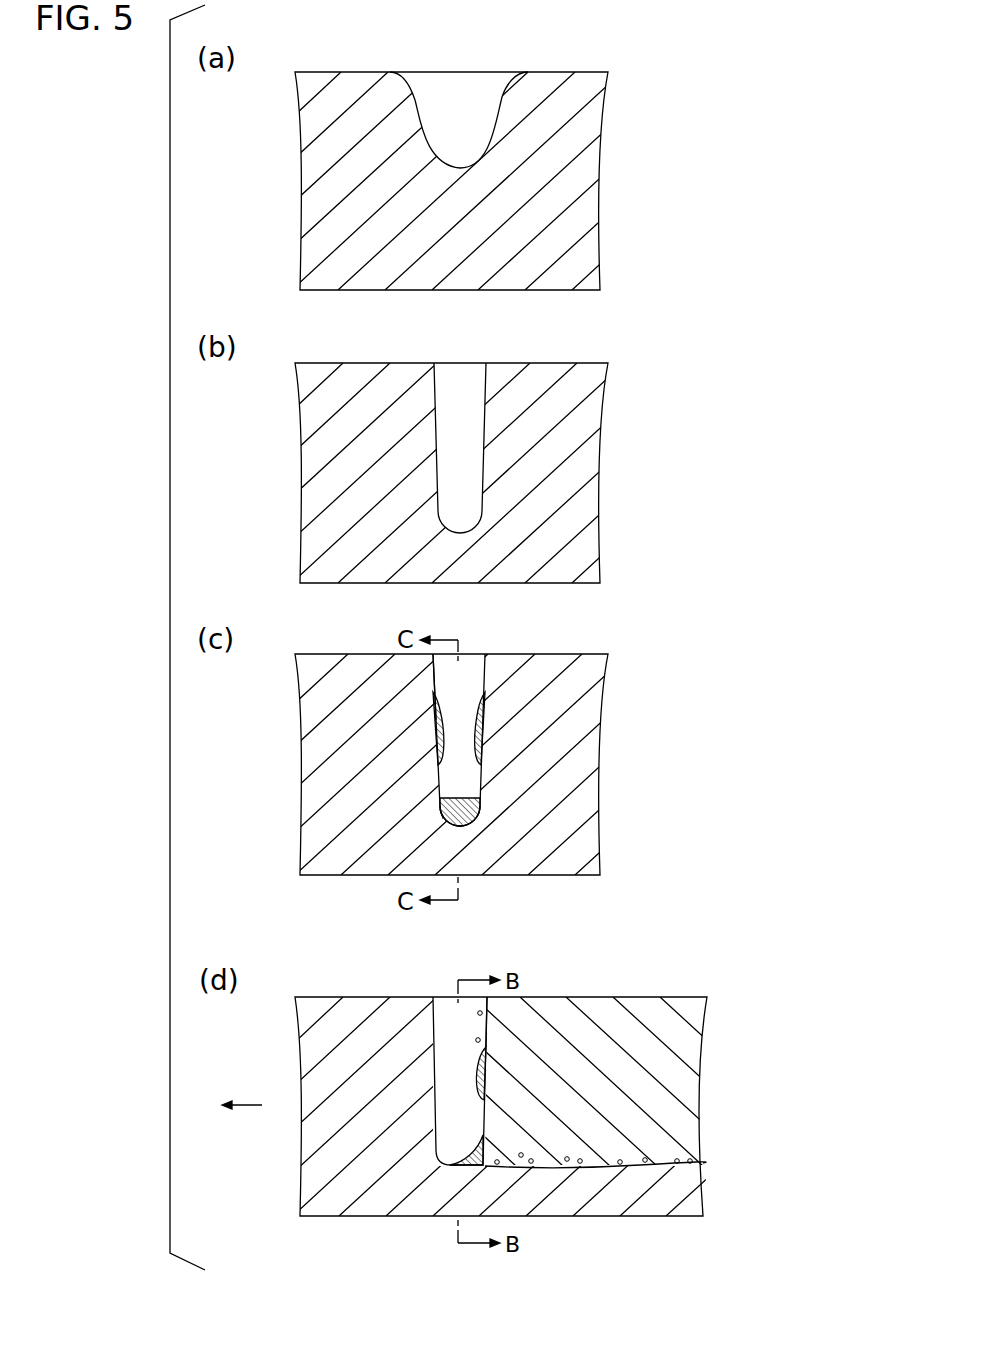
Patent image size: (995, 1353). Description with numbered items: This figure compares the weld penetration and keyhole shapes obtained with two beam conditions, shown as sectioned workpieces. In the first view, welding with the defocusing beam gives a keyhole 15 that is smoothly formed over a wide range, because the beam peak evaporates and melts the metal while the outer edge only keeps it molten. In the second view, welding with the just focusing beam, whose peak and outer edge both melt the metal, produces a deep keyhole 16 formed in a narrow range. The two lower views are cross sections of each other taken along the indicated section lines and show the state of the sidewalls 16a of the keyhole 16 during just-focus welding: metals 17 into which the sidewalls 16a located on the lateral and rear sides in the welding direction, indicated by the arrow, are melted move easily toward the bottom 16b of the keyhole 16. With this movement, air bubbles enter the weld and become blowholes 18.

The keyhole 15 is at (507, 97).
The keyhole 16 is at (484, 388).
The sidewalls of the keyhole 16a is at (437, 693).
The bottom of the keyhole 16b is at (460, 829).
The metals 17 is at (483, 742).
The blowholes 18 is at (442, 818).